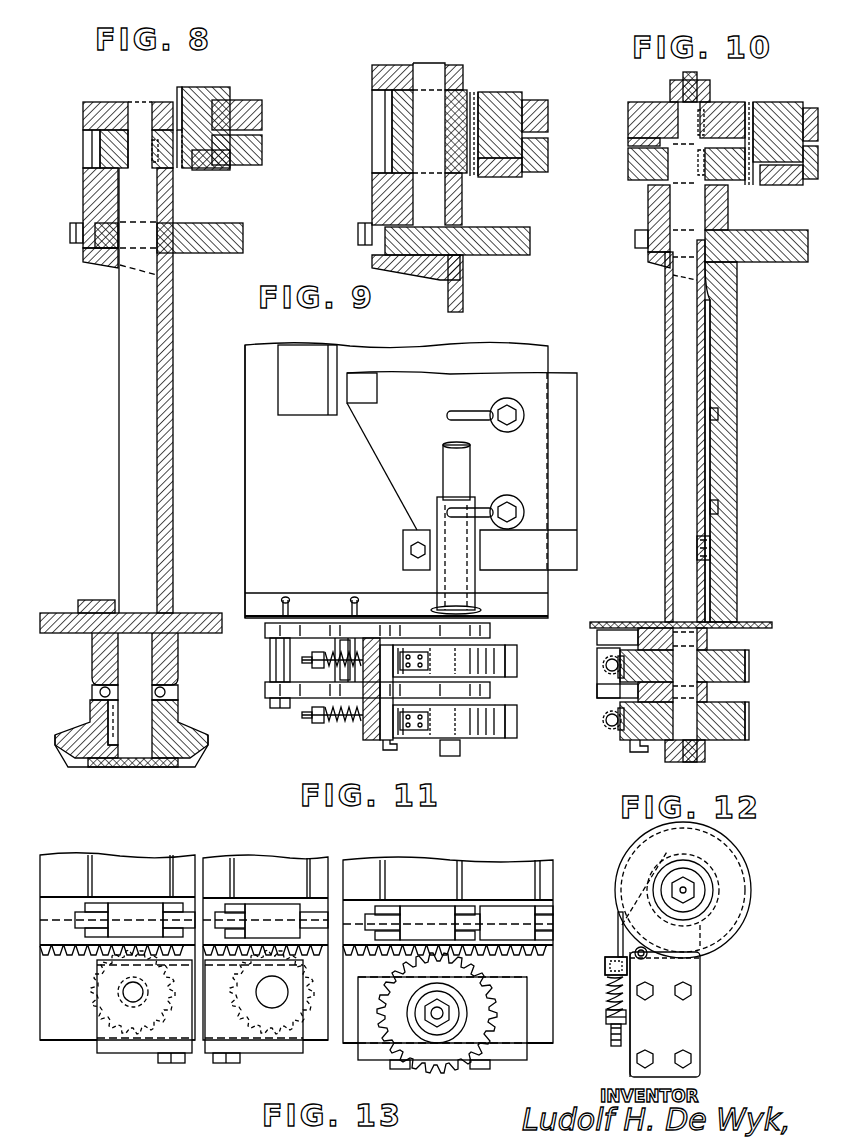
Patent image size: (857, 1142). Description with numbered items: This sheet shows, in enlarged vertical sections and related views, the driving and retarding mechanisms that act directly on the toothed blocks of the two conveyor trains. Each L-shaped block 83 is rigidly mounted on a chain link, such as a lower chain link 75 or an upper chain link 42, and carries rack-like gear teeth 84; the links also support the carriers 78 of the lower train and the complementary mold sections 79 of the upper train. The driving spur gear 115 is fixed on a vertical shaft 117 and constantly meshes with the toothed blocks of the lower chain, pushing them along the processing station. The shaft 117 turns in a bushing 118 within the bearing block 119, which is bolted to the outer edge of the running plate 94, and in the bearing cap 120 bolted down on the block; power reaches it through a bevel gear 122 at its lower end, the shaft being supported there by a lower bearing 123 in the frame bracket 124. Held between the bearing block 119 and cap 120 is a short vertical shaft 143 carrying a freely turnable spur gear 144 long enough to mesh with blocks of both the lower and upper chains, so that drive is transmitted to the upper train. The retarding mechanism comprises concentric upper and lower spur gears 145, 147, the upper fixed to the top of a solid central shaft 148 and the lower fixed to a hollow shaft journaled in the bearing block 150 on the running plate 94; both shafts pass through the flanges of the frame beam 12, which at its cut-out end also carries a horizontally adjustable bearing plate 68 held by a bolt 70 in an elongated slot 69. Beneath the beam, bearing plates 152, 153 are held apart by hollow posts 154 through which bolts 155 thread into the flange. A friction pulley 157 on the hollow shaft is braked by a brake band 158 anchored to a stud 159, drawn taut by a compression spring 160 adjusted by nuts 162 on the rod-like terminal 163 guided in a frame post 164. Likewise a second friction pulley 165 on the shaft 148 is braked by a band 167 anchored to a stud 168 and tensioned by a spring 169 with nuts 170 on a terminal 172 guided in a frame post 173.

In FIG. 8, the channel beam 12 is at (165, 306).
In FIG. 9, the channel beam 12 is at (441, 270).
In FIG. 11, the channel beam 12 is at (396, 480).
In FIG. 10, the channel beam 12 is at (731, 380).
In FIG. 8, the chain link 42 is at (215, 95).
In FIG. 9, the chain link 42 is at (515, 94).
In FIG. 10, the chain link 42 is at (770, 102).
In FIG. 13, the chain link 42 is at (128, 908).
In FIG. 11, the bearing plate 68 is at (462, 471).
In FIG. 10, the bearing plate 68 is at (720, 445).
In FIG. 11, the horizontally elongated slot 69 is at (470, 411).
In FIG. 10, the horizontally elongated slot 69 is at (728, 418).
In FIG. 11, the bolt 70 is at (509, 428).
In FIG. 10, the bolt 70 is at (712, 552).
In FIG. 8, the chain of links 75 is at (230, 168).
In FIG. 9, the chain of links 75 is at (515, 177).
In FIG. 10, the chain of links 75 is at (780, 185).
In FIG. 8, the carrier 78 is at (262, 108).
In FIG. 9, the carrier 78 is at (548, 112).
In FIG. 10, the carrier 78 is at (810, 108).
In FIG. 13, the carrier 78 is at (120, 870).
In FIG. 8, the mold section 79 is at (262, 150).
In FIG. 9, the mold section 79 is at (548, 150).
In FIG. 10, the mold section 79 is at (810, 179).
In FIG. 8, the L-shaped block 83 is at (185, 88).
In FIG. 9, the L-shaped block 83 is at (476, 92).
In FIG. 10, the L-shaped block 83 is at (749, 100).
In FIG. 13, the L-shaped block 83 is at (70, 952).
In FIG. 12, the L-shaped block 83 is at (605, 975).
In FIG. 8, the gear teeth 84 is at (177, 92).
In FIG. 8, the running plate 94 is at (200, 248).
In FIG. 9, the running plate 94 is at (503, 255).
In FIG. 10, the running plate 94 is at (772, 262).
In FIG. 13, the running plate 94 is at (60, 1030).
In FIG. 8, the spur gear 115 is at (108, 148).
In FIG. 13, the spur gear 115 is at (95, 1000).
In FIG. 8, the vertical shaft 117 is at (133, 385).
In FIG. 8, the bushing 118 is at (115, 208).
In FIG. 8, the bearing block 119 is at (100, 192).
In FIG. 8, the bearing cap 120 is at (83, 108).
In FIG. 9, the bearing cap 120 is at (372, 75).
In FIG. 13, the bearing cap 120 is at (105, 1055).
In FIG. 8, the bevel gear 122 is at (80, 745).
In FIG. 8, the lower bearing 123 is at (98, 668).
In FIG. 8, the frame bracket 124 is at (62, 633).
In FIG. 9, the short vertical shaft 143 is at (417, 199).
In FIG. 9, the spur gear 144 is at (392, 138).
In FIG. 10, the upper spur gear 145 is at (652, 102).
In FIG. 13, the upper spur gear 145 is at (394, 1030).
In FIG. 10, the lower spur gear 147 is at (642, 164).
In FIG. 10, the central vertical shaft 148 is at (683, 360).
In FIG. 10, the bearing block 150 is at (655, 210).
In FIG. 13, the bearing block 150 is at (497, 1052).
In FIG. 11, the bearing plate 152 is at (272, 630).
In FIG. 10, the bearing plate 152 is at (717, 638).
In FIG. 11, the bearing plate 153 is at (265, 689).
In FIG. 10, the bearing plate 153 is at (717, 692).
In FIG. 11, the hollow post 154 is at (270, 656).
In FIG. 11, the bolt 155 is at (270, 705).
In FIG. 12, the bolt 155 is at (680, 997).
In FIG. 11, the friction pulley 157 is at (508, 655).
In FIG. 10, the friction pulley 157 is at (748, 660).
In FIG. 11, the friction brake band 158 is at (517, 662).
In FIG. 10, the friction brake band 158 is at (749, 673).
In FIG. 11, the anchor stud 159 is at (395, 625).
In FIG. 11, the compression spring 160 is at (340, 640).
In FIG. 11, the nuts 162 is at (335, 640).
In FIG. 11, the rod-like terminal 163 is at (325, 640).
In FIG. 11, the rigid frame post 164 is at (372, 640).
In FIG. 10, the rigid frame post 164 is at (605, 660).
In FIG. 11, the second friction pulley 165 is at (510, 738).
In FIG. 10, the second friction pulley 165 is at (748, 738).
In FIG. 12, the second friction pulley 165 is at (725, 862).
In FIG. 11, the brake band 167 is at (512, 715).
In FIG. 10, the brake band 167 is at (749, 718).
In FIG. 12, the brake band 167 is at (648, 840).
In FIG. 11, the anchor stud 168 is at (397, 748).
In FIG. 12, the anchor stud 168 is at (647, 958).
In FIG. 11, the compression spring 169 is at (335, 723).
In FIG. 12, the compression spring 169 is at (610, 998).
In FIG. 11, the nuts 170 is at (316, 723).
In FIG. 12, the nuts 170 is at (606, 1018).
In FIG. 11, the rod-like terminal 172 is at (302, 716).
In FIG. 12, the rod-like terminal 172 is at (612, 1046).
In FIG. 11, the rigid frame post 173 is at (365, 735).
In FIG. 10, the rigid frame post 173 is at (632, 745).
In FIG. 12, the rigid frame post 173 is at (608, 962).